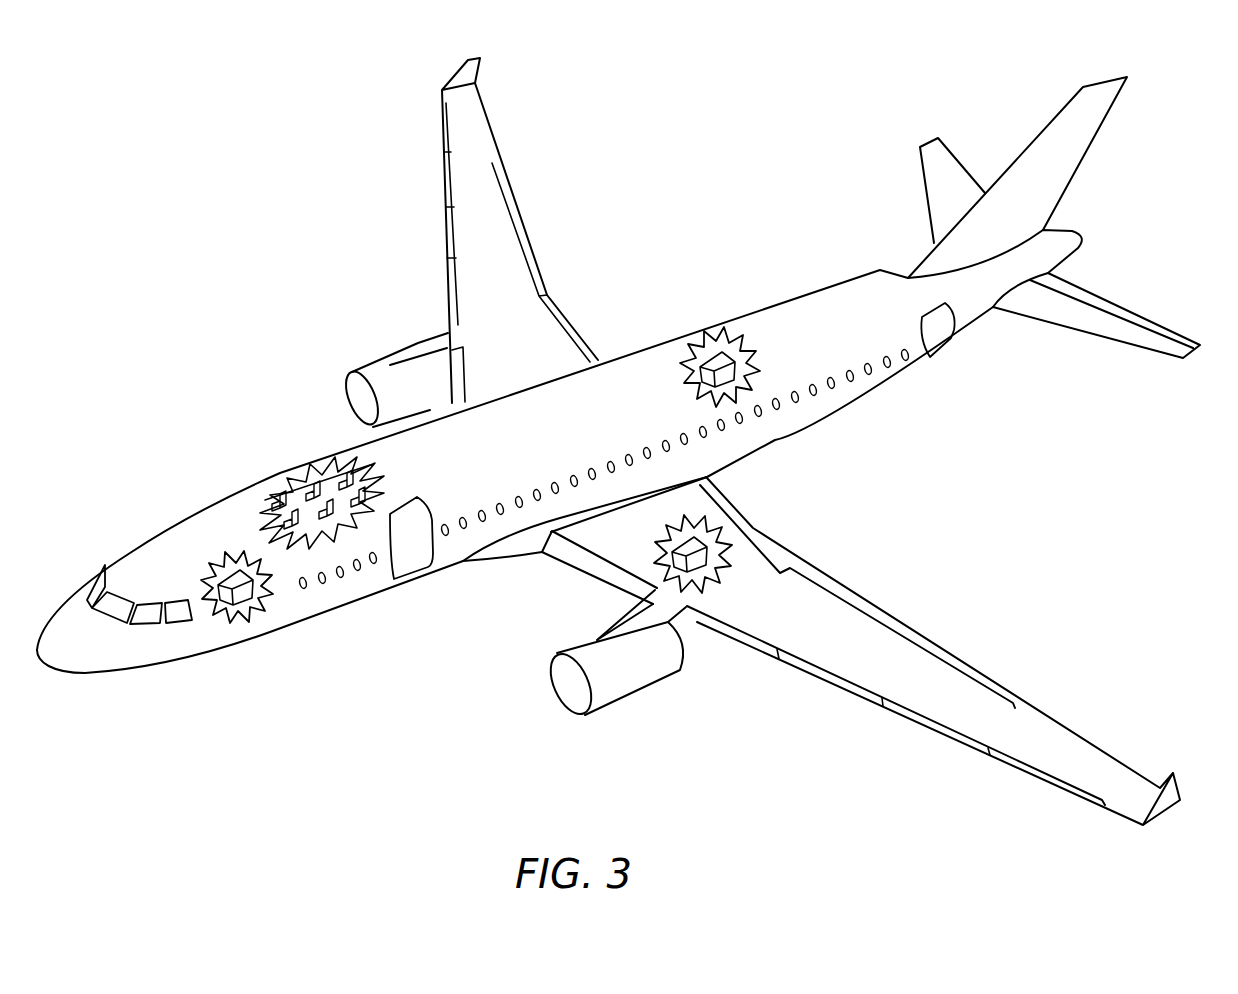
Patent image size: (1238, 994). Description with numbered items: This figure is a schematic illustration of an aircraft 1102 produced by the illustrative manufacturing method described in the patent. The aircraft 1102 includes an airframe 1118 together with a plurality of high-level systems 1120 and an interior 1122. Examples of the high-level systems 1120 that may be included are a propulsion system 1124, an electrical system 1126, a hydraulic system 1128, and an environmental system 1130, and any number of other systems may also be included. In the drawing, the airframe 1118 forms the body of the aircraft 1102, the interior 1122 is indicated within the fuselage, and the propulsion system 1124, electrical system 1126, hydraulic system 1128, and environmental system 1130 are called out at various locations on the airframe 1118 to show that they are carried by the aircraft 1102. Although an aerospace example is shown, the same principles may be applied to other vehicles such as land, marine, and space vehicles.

The aircraft 1102 is at (268, 188).
The airframe 1118 is at (277, 443).
The high-level systems 1120 is at (968, 518).
The interior 1122 is at (281, 498).
The propulsion system 1124 is at (374, 364).
The electrical system 1126 is at (235, 575).
The hydraulic system 1128 is at (712, 533).
The environmental system 1130 is at (710, 352).